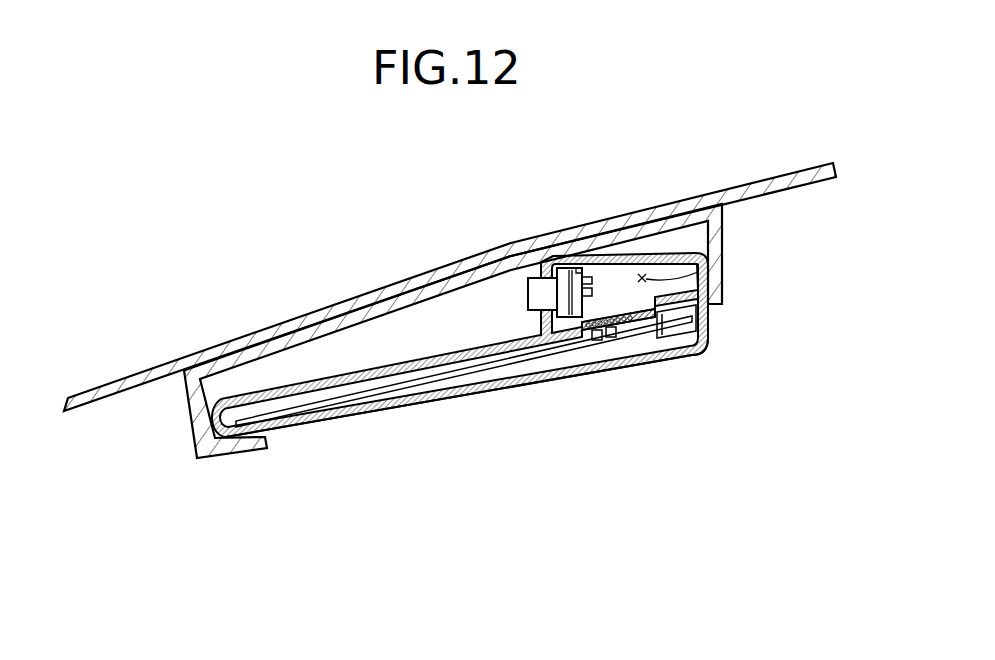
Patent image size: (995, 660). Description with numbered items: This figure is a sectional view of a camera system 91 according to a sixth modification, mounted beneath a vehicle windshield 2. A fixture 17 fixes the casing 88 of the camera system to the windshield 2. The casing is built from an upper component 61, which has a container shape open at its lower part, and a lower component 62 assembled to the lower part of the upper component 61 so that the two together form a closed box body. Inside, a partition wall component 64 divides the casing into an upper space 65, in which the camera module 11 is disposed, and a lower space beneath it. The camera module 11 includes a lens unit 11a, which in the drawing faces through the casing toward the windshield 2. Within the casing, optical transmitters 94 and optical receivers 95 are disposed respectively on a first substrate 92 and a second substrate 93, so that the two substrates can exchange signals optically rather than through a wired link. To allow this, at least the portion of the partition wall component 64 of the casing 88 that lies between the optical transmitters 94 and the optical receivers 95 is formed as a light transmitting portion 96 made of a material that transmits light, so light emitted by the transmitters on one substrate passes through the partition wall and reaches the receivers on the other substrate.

The windshield 2 is at (140, 378).
The fixture 17 is at (193, 433).
The upper component 61 is at (380, 362).
The lower component 62 is at (375, 412).
The partition wall component 64 is at (660, 328).
The upper space 65 is at (722, 262).
The casing 88 is at (717, 335).
The camera system 91 is at (350, 441).
The first substrate 92 is at (578, 265).
The second substrate 93 is at (437, 393).
The optical transmitter 94 is at (593, 278).
The optical receiver 95 is at (593, 292).
The light transmitting portion 96 is at (640, 320).
The camera module 11 is at (563, 268).
The lens unit 11a is at (527, 296).